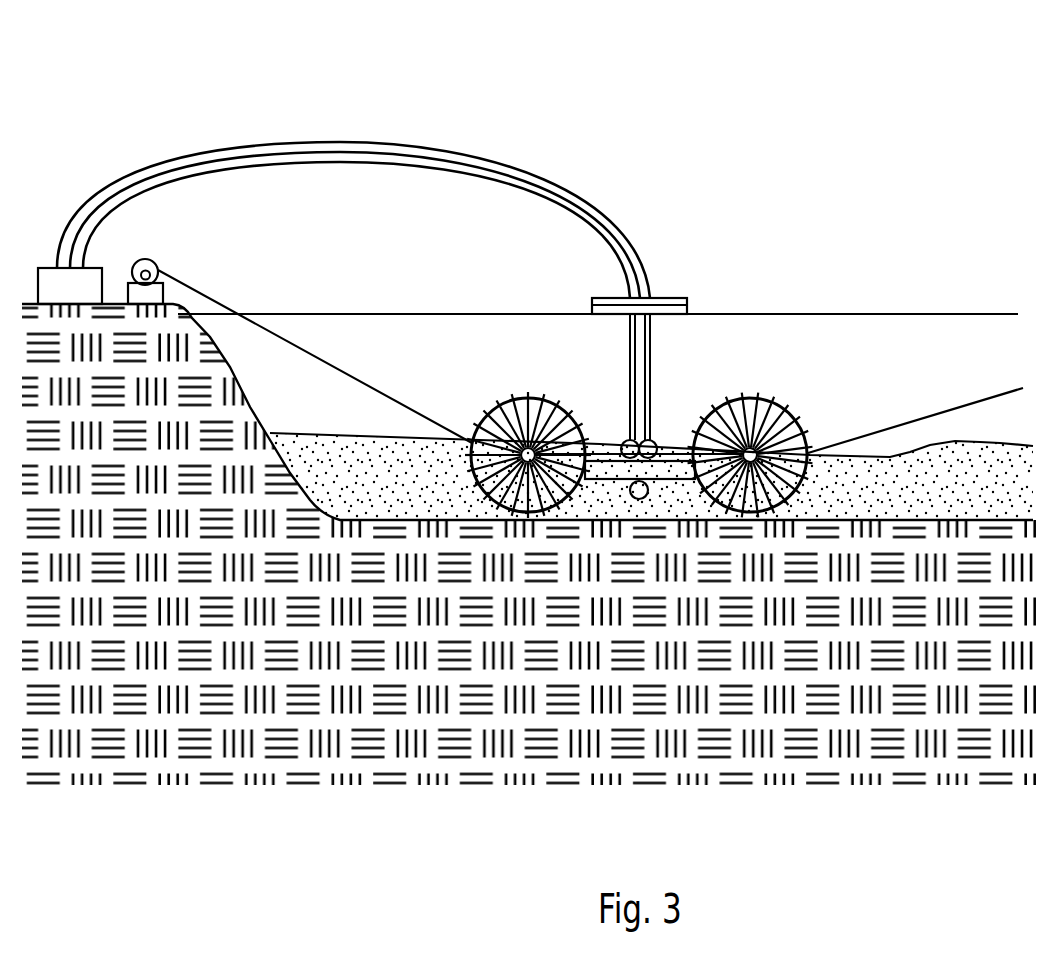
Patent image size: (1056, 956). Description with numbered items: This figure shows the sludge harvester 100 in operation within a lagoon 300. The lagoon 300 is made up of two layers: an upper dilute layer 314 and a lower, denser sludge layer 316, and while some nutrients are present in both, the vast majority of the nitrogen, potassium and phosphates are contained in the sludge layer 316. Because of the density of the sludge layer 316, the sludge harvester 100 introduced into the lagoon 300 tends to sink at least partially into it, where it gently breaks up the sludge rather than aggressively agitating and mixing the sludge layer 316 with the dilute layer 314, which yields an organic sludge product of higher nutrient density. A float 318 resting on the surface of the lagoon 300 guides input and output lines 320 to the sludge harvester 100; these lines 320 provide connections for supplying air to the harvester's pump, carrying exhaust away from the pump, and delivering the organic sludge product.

The lagoon 300 is at (918, 120).
The sludge harvester 100 is at (673, 470).
The dilute layer 314 is at (948, 381).
The sludge layer 316 is at (968, 501).
The float 318 is at (670, 297).
The input and output lines 320 is at (557, 180).